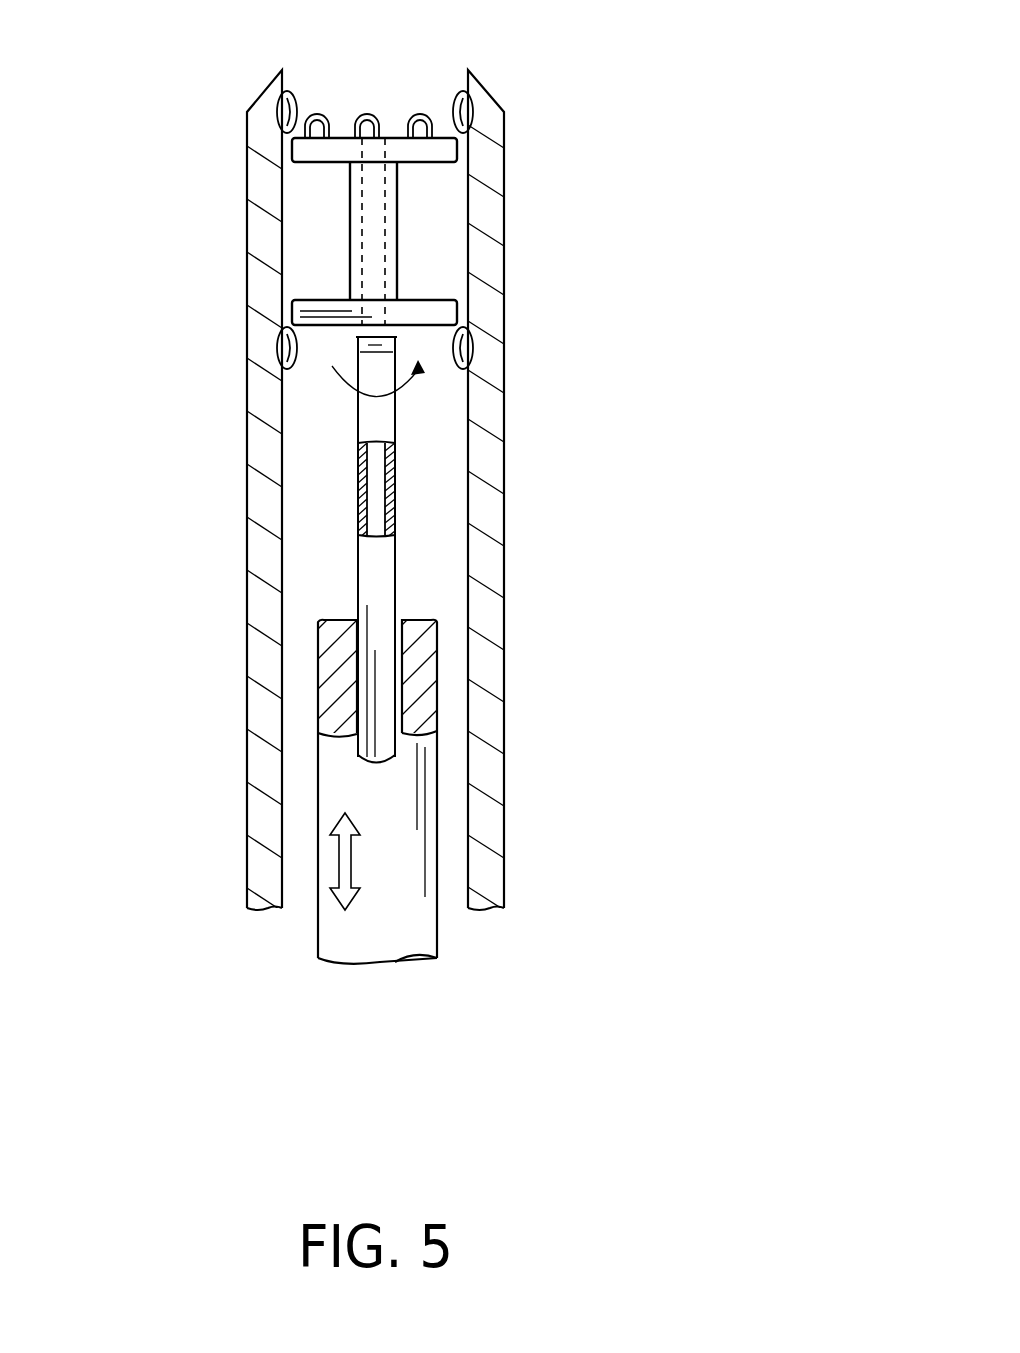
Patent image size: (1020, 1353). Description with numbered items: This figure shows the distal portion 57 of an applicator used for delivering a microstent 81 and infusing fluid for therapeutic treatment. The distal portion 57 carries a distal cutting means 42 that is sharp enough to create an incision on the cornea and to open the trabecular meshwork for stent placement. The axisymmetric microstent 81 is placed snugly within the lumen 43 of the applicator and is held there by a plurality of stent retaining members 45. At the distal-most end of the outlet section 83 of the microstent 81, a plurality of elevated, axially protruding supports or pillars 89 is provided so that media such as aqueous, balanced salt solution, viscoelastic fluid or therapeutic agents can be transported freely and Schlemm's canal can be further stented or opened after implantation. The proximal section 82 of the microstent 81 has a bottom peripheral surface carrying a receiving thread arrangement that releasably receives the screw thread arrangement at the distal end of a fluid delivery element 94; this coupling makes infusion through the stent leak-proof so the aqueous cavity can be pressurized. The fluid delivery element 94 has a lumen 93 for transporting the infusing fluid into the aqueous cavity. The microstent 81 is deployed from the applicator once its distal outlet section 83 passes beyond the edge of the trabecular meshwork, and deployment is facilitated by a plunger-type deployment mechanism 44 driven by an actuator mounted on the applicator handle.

The distal cutting means 42 is at (478, 70).
The stent retaining members 45 is at (278, 108).
The distal portion 57 is at (391, 495).
The supports or pillars 89 is at (324, 126).
The outlet section 83 is at (313, 158).
The microstent 81 is at (437, 305).
The proximal section 82 is at (318, 313).
The lumen 93 is at (395, 463).
The fluid delivery element 94 is at (385, 573).
The plunger-type deployment mechanism 44 is at (437, 638).
The lumen 43 is at (453, 693).